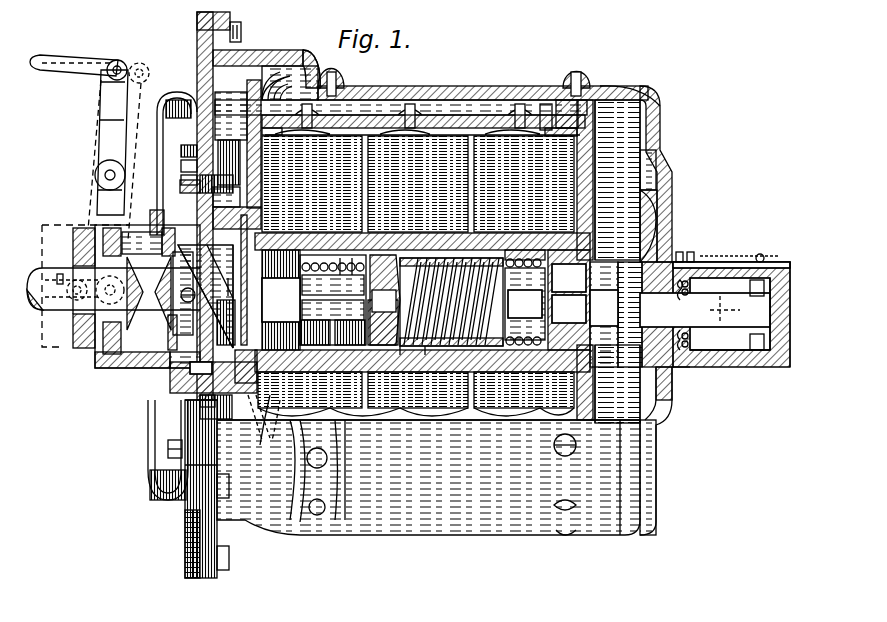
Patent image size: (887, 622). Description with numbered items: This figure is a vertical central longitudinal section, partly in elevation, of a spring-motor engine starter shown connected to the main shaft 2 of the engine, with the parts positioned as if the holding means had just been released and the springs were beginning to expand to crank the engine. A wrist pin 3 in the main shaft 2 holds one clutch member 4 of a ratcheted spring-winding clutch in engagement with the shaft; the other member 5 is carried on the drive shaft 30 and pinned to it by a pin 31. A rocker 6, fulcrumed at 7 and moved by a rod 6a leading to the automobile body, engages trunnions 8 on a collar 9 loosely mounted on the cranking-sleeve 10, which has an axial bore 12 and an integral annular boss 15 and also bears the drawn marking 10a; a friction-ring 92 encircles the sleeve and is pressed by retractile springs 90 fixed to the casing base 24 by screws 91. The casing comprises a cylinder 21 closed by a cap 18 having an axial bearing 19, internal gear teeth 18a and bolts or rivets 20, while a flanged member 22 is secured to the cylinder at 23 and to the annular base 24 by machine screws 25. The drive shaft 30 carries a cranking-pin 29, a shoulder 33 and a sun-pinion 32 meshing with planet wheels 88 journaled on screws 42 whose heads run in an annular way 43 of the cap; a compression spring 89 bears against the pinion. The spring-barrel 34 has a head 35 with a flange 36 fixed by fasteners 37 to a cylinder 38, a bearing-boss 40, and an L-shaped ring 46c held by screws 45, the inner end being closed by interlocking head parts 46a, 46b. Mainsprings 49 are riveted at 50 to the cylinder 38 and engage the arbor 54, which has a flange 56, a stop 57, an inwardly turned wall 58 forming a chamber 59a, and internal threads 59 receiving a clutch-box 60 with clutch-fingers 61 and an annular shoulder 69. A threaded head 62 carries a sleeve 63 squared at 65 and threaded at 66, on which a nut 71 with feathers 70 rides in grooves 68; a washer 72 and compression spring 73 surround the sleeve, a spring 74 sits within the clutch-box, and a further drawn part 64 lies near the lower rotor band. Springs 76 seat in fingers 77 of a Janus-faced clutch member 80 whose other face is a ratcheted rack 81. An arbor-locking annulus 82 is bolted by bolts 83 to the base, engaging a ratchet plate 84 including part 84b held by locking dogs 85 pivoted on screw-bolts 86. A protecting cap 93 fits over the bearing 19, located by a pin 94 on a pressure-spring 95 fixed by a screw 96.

The main shaft 2 is at (30, 305).
The wrist pin 3 is at (668, 566).
The ratcheted spring-winding clutch member 4 is at (90, 360).
The ratcheted clutch member 5 is at (152, 362).
The rocker 6 is at (172, 593).
The rod 6a is at (90, 54).
The fulcrum 7 is at (97, 178).
The trunnions 8 is at (70, 304).
The collar 9 is at (95, 228).
The cranking-sleeve 10 is at (72, 350).
The coupling member 10a is at (185, 368).
The axial bore 12 is at (182, 165).
The annular boss 15 is at (180, 392).
The cap 18 is at (660, 148).
The internal gear teeth 18a is at (626, 90).
The axial bearing 19 is at (724, 367).
The bolts or rivets 20 is at (578, 70).
The cylinder 21 is at (490, 88).
The flanged member 22 is at (302, 64).
The securing point 23 is at (332, 70).
The annular base 24 is at (197, 57).
The machine screws 25 is at (240, 30).
The cranking-pin 29 is at (776, 367).
The drive shaft 30 is at (748, 252).
The pin 31 is at (186, 289).
The pinion 32 is at (674, 367).
The shoulder 33 is at (385, 300).
The spring-barrel 34 is at (578, 140).
The head 35 is at (648, 110).
The annular flange 36 is at (560, 112).
The screws or rivets 37 is at (540, 118).
The cylinder 38 is at (462, 116).
The annular bearing-boss 40 is at (644, 250).
The screws 42 is at (662, 170).
The annular way 43 is at (670, 190).
The screws 45 is at (273, 137).
The head part 46a is at (252, 80).
The head part 46b is at (256, 395).
The L-shaped ring 46c is at (290, 72).
The mainsprings 49 is at (362, 136).
The rivet 50 is at (310, 102).
The arbor 54 is at (451, 313).
The flange 56 is at (142, 408).
The stop 57 is at (237, 265).
The inwardly turned wall 58 is at (418, 184).
The internal threads 59 is at (333, 291).
The chamber 59a is at (264, 420).
The clutch-box 60 is at (332, 313).
The clutch-fingers 61 is at (283, 300).
The threaded head 62 is at (564, 301).
The sleeve 63 is at (466, 314).
The collar 64 is at (404, 357).
The squared portion 65 is at (600, 314).
The threads or spirals 66 is at (426, 357).
The confronting grooves 68 is at (454, 262).
The annular shoulder 69 is at (380, 334).
The feathers 70 is at (422, 303).
The nut or dog 71 is at (358, 277).
The washer 72 is at (518, 249).
The compression spring 73 is at (436, 313).
The compression spring 74 is at (344, 277).
The compression spring 76 is at (230, 286).
The fingers 77 is at (330, 205).
The Janus-faced clutch member 80 is at (208, 296).
The ratcheted rack 81 is at (229, 296).
The arbor-locking annulus 82 is at (190, 170).
The bolts 83 is at (180, 182).
The ratchet plate 84 is at (190, 150).
The ratchet plate part 84b is at (240, 410).
The locking dogs 85 is at (215, 120).
The screw-bolts 86 is at (186, 98).
The planet wheels 88 is at (625, 130).
The compression spring 89 is at (708, 367).
The retractile springs 90 is at (166, 100).
The screws 91 is at (170, 450).
The friction-ring 92 is at (155, 215).
The protecting cap 93 is at (752, 378).
The pin 94 is at (708, 262).
The pressure-spring 95 is at (726, 262).
The screw 96 is at (765, 262).